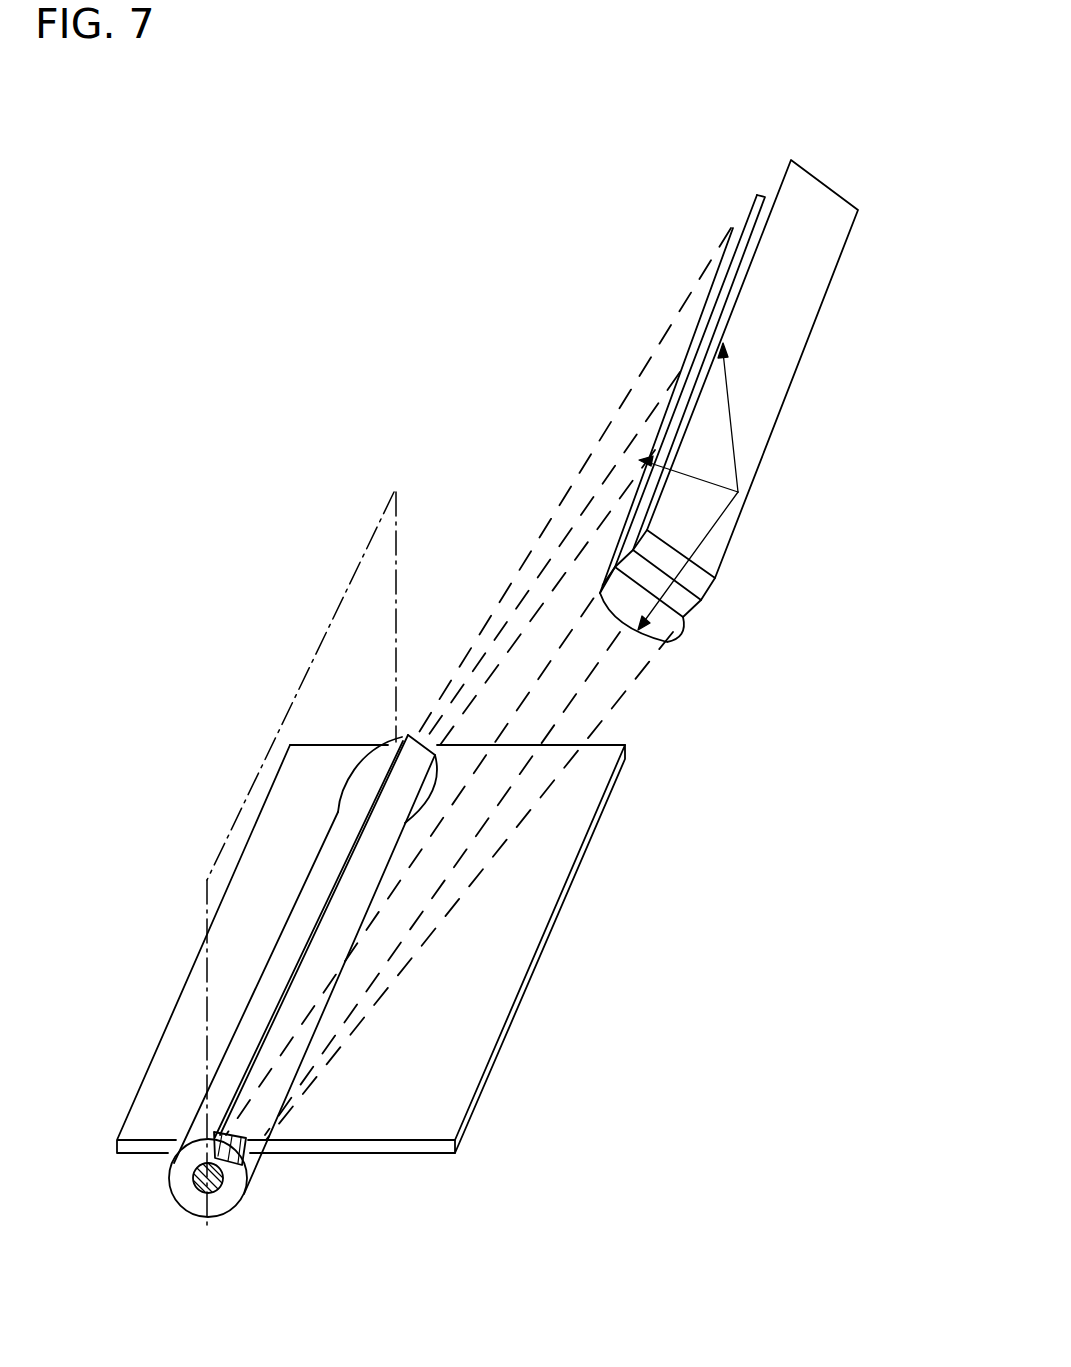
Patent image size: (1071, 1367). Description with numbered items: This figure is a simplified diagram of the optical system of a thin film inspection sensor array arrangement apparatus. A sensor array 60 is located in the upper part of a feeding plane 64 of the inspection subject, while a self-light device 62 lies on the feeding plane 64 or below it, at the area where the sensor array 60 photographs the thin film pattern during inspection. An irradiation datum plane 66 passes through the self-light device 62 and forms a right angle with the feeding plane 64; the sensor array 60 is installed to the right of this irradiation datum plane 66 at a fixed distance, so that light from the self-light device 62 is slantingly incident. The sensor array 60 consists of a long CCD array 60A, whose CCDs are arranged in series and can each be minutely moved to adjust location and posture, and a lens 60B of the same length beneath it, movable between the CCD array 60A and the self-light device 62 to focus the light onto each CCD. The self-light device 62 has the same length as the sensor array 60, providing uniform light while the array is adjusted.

The sensor array 60 is at (886, 620).
The CCD array 60A is at (698, 583).
The lens 60B is at (670, 621).
The self-light device 62 is at (192, 1198).
The feeding plane 64 is at (527, 977).
The irradiation datum plane 66 is at (358, 562).